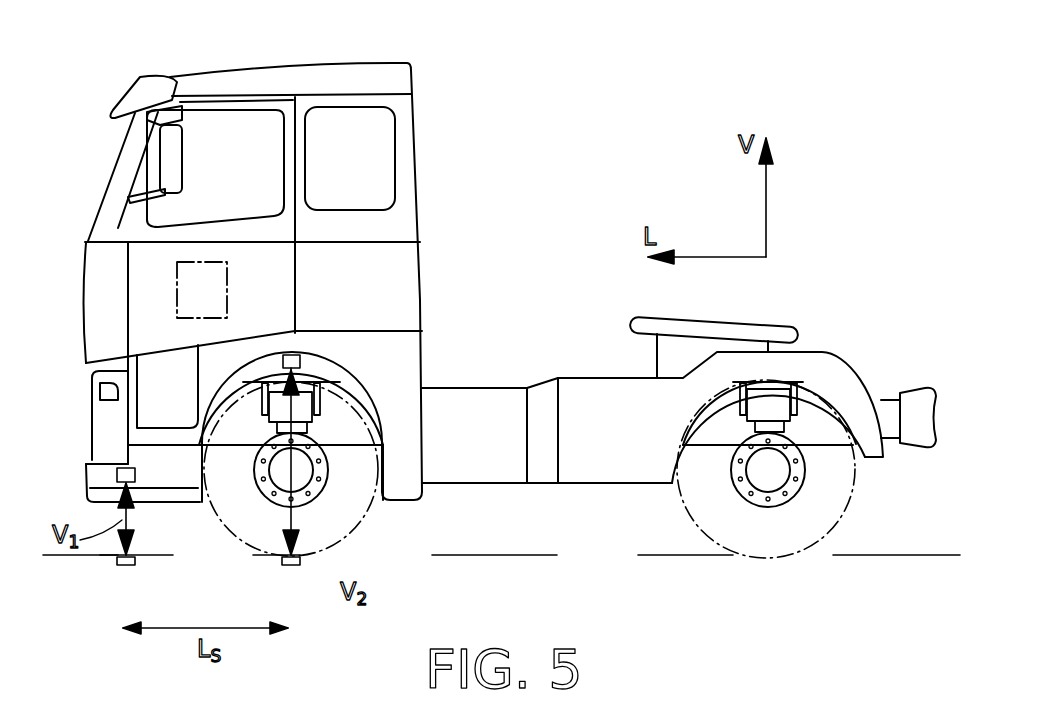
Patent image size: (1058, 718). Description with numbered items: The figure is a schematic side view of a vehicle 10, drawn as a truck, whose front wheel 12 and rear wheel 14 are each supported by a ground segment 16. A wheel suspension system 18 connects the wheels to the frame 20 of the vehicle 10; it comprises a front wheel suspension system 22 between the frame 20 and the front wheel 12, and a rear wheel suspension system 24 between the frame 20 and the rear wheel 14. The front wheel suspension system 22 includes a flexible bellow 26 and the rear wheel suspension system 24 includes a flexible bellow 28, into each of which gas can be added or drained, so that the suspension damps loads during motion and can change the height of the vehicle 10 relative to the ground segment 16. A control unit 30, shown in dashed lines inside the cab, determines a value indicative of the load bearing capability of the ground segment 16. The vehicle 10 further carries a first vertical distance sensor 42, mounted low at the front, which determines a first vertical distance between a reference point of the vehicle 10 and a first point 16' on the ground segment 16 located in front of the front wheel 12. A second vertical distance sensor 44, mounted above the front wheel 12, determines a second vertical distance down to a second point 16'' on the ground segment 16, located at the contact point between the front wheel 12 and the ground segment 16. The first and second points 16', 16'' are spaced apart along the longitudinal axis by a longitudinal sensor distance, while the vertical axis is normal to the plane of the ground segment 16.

The vehicle 10 is at (525, 90).
The front wheel 12 is at (422, 388).
The rear wheel 14 is at (836, 391).
The ground segment 16 is at (137, 581).
The first point 16' is at (87, 580).
The second point 16'' is at (266, 581).
The wheel suspension system 18 is at (332, 502).
The frame 20 is at (372, 420).
The front wheel suspension system 22 is at (322, 430).
The rear wheel suspension system 24 is at (812, 440).
The flexible bellow 26 is at (283, 408).
The flexible bellow 28 is at (767, 407).
The control unit 30 is at (177, 275).
The first vertical distance sensor 42 is at (115, 480).
The second vertical distance sensor 44 is at (300, 360).